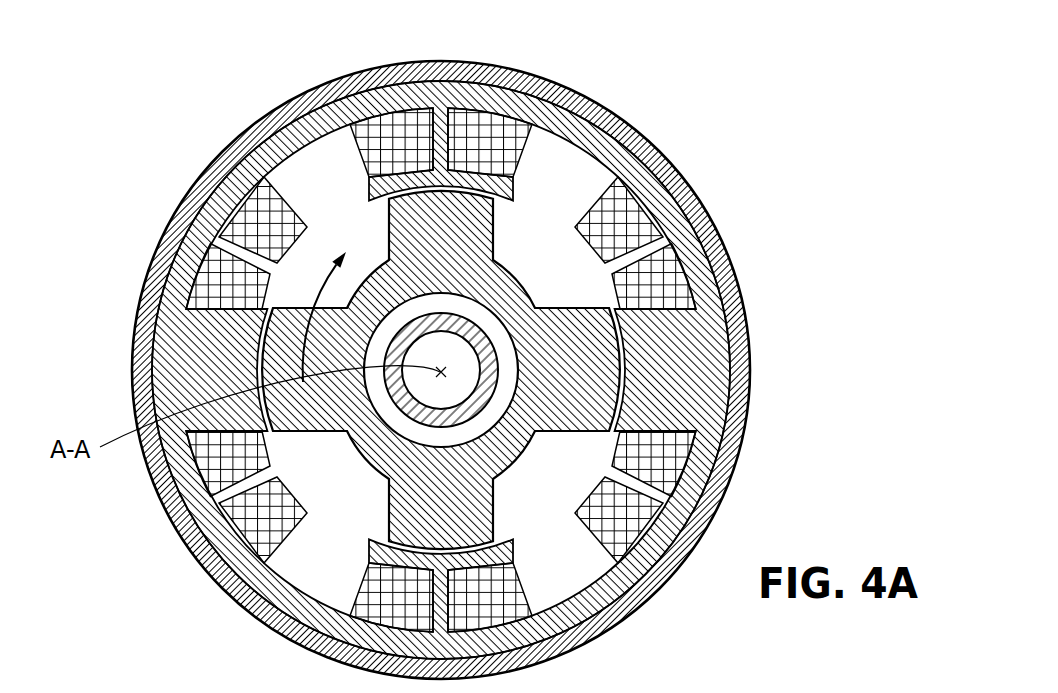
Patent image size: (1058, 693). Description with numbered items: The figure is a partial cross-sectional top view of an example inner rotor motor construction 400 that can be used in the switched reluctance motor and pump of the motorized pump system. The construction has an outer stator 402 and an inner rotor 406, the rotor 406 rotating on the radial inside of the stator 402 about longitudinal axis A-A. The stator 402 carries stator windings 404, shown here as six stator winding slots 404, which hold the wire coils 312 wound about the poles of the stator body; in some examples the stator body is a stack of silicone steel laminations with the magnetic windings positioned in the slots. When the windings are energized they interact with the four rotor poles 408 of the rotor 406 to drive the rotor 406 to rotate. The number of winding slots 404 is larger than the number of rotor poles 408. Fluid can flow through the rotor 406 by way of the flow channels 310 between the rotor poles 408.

The inner rotor motor construction 400 is at (439, 342).
The outer stator 402 is at (697, 346).
The stator windings 404 is at (351, 598).
The wire coils 312 is at (232, 273).
The inner rotor 406 is at (524, 414).
The rotor poles 408 is at (570, 412).
The flow channels 310 is at (527, 232).